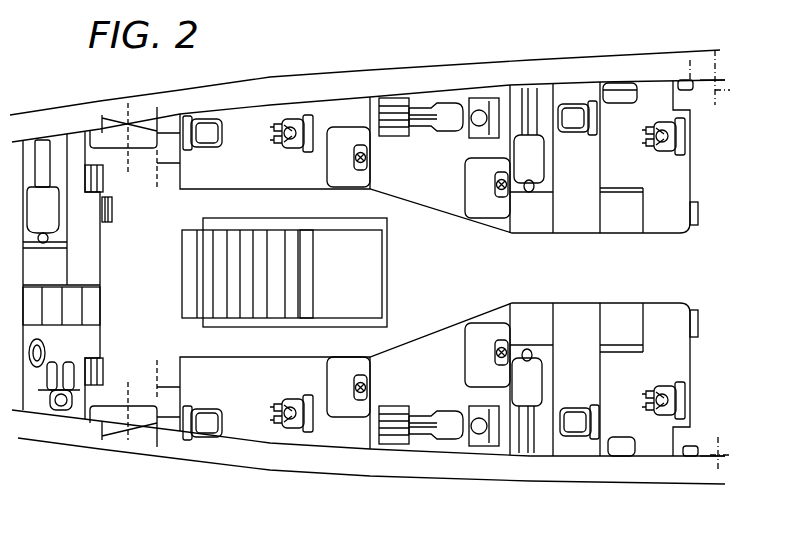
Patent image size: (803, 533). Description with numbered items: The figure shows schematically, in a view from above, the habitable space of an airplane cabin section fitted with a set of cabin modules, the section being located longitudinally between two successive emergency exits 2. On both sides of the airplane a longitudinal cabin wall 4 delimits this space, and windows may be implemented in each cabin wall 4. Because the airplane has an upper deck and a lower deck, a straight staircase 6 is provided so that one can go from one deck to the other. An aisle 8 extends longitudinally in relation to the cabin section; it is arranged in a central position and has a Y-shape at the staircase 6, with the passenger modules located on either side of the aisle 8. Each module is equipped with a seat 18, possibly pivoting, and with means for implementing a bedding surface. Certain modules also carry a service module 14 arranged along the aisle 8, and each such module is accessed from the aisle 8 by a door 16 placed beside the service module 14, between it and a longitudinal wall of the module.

The emergency exit 2 is at (116, 120).
The cabin wall 4 is at (365, 85).
The staircase 6 is at (193, 277).
The aisle 8 is at (658, 272).
The service module 14 is at (528, 218).
The door 16 is at (285, 190).
The seat 18 is at (593, 133).